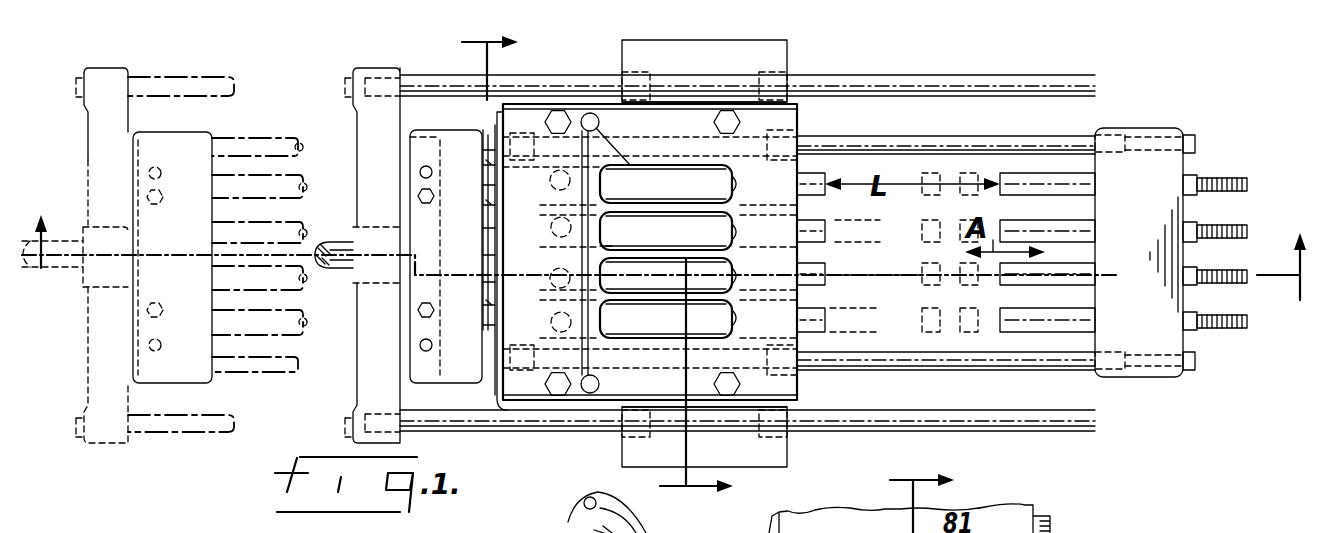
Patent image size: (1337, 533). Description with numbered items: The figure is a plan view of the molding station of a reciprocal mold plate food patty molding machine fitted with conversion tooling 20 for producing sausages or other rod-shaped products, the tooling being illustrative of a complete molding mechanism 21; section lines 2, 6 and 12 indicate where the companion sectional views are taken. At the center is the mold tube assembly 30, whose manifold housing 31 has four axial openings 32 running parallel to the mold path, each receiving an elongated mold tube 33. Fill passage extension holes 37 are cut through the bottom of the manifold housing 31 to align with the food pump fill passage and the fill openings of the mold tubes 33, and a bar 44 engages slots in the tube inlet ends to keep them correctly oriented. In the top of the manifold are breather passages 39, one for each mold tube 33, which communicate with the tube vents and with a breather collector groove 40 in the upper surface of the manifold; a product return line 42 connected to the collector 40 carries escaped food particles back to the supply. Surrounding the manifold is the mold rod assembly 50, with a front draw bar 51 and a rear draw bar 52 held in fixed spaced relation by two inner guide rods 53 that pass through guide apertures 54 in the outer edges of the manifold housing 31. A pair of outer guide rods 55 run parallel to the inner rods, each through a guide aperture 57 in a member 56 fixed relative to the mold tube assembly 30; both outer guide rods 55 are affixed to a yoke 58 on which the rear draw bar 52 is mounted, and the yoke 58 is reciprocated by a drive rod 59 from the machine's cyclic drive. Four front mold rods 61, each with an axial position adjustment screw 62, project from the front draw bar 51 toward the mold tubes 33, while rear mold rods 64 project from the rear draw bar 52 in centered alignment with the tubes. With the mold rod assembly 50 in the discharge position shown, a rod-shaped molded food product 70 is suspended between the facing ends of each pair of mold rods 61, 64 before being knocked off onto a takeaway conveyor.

The conversion tooling 20 is at (540, 446).
The molding mechanism 21 is at (1090, 114).
The mold tube assembly 30 is at (782, 122).
The manifold housing 31 is at (805, 120).
The axial openings 32 is at (818, 202).
The mold tubes 33 is at (690, 199).
The fill passage extension holes 37 is at (550, 182).
The breather passages 39 is at (724, 206).
The breather collector groove 40 is at (606, 356).
The product return line 42 is at (616, 245).
The bar 44 is at (496, 240).
The mold rod assembly 50 is at (468, 112).
The front draw bar 51 is at (1176, 130).
The rear draw bar 52 is at (196, 134).
The inner guide rods 53 is at (268, 142).
The guide apertures 54 is at (705, 138).
The outer guide rods 55 is at (232, 98).
The member 56 is at (790, 70).
The guide aperture 57 is at (744, 76).
The yoke 58 is at (100, 444).
The drive rod 59 is at (62, 240).
The front mold rods 61 is at (1098, 230).
The axial position adjustment screw 62 is at (1228, 230).
The rear mold rods 64 is at (306, 224).
The rod-shaped molded food product 70 is at (906, 290).
The section line 2- 2 is at (669, 279).
The section line 6- 6 is at (584, 271).
The section line 12- 12 is at (905, 500).